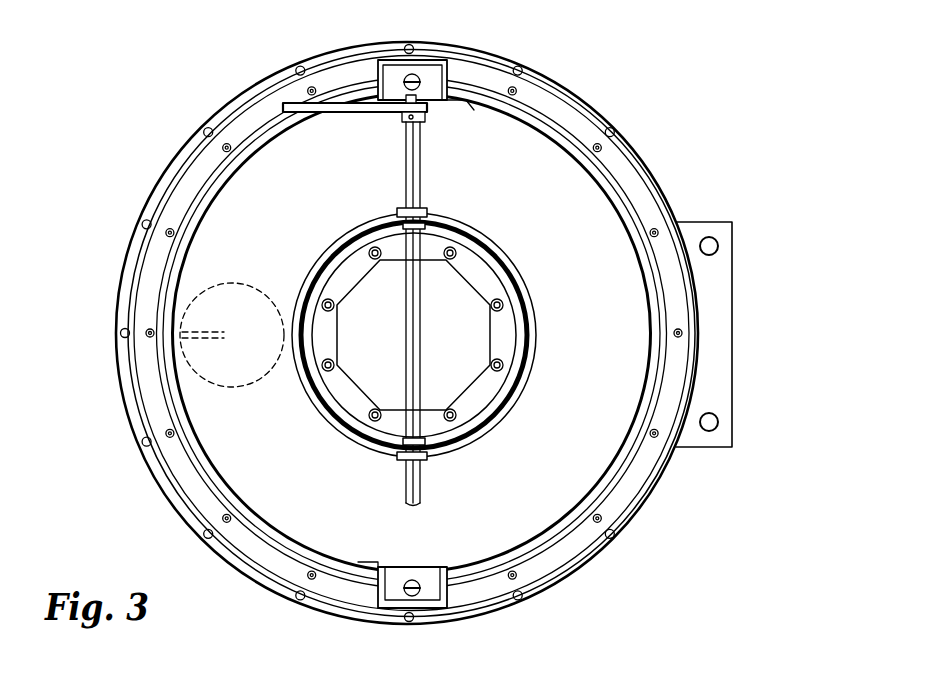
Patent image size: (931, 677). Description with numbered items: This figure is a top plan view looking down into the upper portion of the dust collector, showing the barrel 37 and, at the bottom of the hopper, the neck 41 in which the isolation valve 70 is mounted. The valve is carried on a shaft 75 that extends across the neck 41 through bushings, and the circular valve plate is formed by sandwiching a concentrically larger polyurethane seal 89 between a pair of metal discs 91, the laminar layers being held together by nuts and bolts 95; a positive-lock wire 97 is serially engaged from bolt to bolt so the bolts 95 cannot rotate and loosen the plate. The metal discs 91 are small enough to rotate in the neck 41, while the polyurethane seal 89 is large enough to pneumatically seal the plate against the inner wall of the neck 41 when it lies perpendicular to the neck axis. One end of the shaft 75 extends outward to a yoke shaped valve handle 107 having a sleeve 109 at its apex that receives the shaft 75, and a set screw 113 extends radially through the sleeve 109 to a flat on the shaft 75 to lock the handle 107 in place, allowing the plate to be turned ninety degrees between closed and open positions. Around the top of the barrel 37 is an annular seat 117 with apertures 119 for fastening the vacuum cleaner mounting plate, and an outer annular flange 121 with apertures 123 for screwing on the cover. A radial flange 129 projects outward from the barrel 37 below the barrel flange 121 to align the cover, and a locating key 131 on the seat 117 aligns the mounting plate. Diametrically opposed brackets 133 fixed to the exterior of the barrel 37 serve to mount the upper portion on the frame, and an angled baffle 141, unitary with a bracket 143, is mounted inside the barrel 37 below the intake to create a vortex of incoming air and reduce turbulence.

The barrel 37 is at (625, 233).
The neck 41 is at (452, 228).
The isolation valve 70 is at (562, 228).
The shaft 75 is at (430, 483).
The polyurethane seal 89 is at (325, 405).
The metal discs 91 is at (378, 428).
The bolts 95 is at (504, 363).
The positive-lock wire 97 is at (353, 385).
The valve handle 107 is at (352, 112).
The sleeve 109 is at (428, 120).
The set screw 113 is at (404, 120).
The annular seat 117 is at (152, 383).
The apertures 119 is at (229, 152).
The outer annular flange 121 is at (122, 262).
The apertures 123 is at (705, 556).
The radial flange 129 is at (722, 313).
The locating key 131 is at (686, 338).
The brackets 133 is at (478, 22).
The baffle 141 is at (265, 283).
The bracket 143 is at (213, 292).